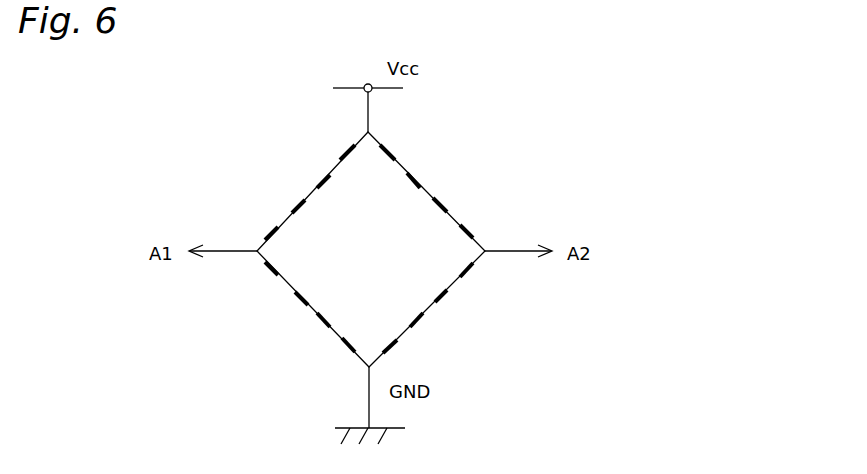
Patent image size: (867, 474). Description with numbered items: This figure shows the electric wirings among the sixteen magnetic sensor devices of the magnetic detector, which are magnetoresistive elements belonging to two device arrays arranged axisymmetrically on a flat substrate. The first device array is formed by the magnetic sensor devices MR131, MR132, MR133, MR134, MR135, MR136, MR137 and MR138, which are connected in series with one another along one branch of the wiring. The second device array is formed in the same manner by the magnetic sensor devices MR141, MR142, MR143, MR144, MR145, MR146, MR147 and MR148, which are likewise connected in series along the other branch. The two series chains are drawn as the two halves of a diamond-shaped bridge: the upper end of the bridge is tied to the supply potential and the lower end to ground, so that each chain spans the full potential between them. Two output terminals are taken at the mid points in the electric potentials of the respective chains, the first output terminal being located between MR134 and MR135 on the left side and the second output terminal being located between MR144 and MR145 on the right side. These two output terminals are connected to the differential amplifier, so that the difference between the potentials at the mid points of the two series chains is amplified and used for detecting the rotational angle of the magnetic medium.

The magnetic sensor device MR131 is at (343, 352).
The magnetic sensor device MR132 is at (322, 322).
The magnetic sensor device MR133 is at (298, 293).
The magnetic sensor device MR134 is at (268, 268).
The magnetic sensor device MR135 is at (268, 233).
The magnetic sensor device MR136 is at (297, 205).
The magnetic sensor device MR137 is at (323, 178).
The magnetic sensor device MR138 is at (347, 150).
The magnetic sensor device MR141 is at (390, 148).
The magnetic sensor device MR142 is at (417, 175).
The magnetic sensor device MR143 is at (440, 203).
The magnetic sensor device MR144 is at (470, 230).
The magnetic sensor device MR145 is at (467, 273).
The magnetic sensor device MR146 is at (443, 293).
The magnetic sensor device MR147 is at (413, 323).
The magnetic sensor device MR148 is at (390, 353).